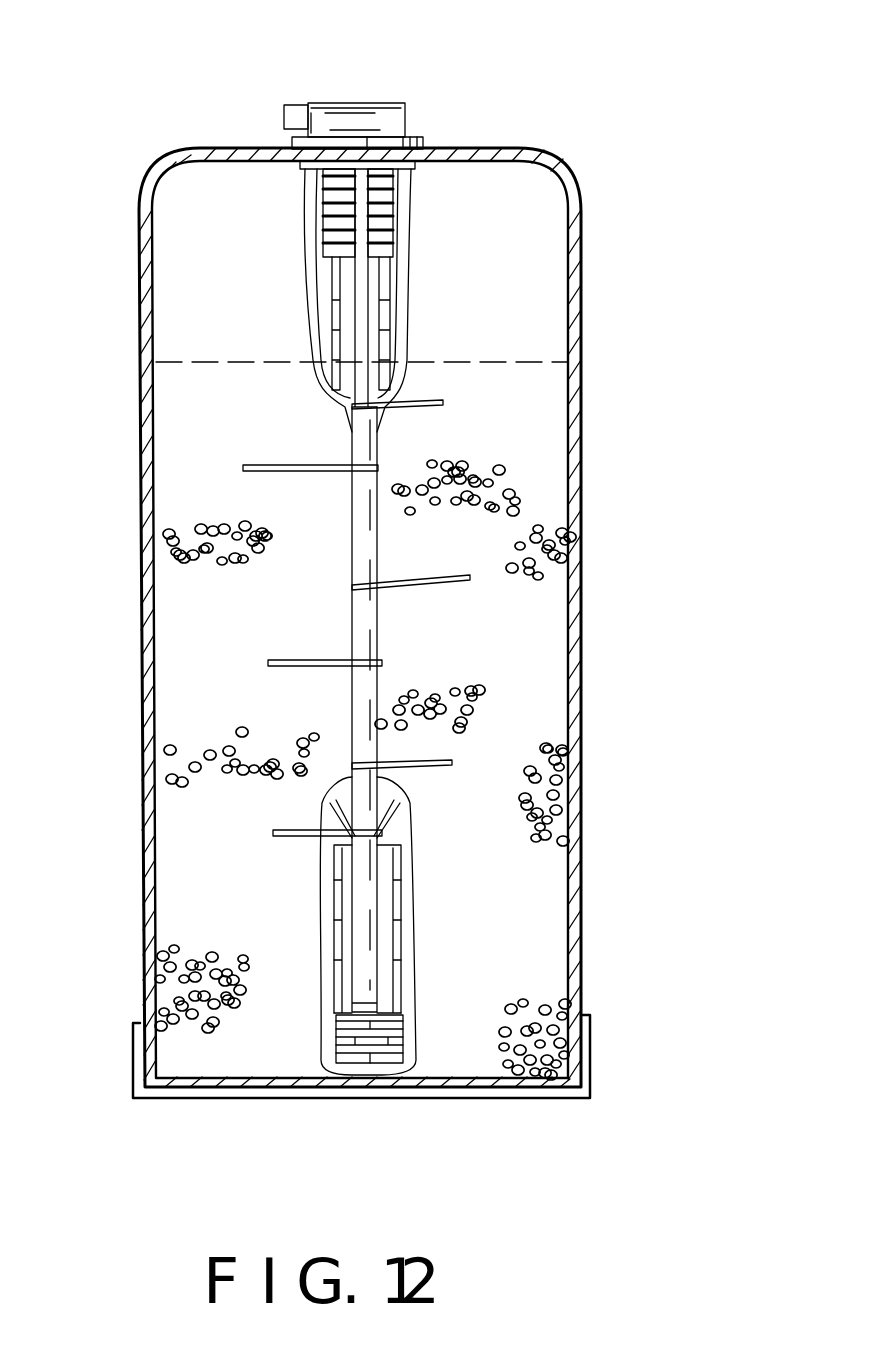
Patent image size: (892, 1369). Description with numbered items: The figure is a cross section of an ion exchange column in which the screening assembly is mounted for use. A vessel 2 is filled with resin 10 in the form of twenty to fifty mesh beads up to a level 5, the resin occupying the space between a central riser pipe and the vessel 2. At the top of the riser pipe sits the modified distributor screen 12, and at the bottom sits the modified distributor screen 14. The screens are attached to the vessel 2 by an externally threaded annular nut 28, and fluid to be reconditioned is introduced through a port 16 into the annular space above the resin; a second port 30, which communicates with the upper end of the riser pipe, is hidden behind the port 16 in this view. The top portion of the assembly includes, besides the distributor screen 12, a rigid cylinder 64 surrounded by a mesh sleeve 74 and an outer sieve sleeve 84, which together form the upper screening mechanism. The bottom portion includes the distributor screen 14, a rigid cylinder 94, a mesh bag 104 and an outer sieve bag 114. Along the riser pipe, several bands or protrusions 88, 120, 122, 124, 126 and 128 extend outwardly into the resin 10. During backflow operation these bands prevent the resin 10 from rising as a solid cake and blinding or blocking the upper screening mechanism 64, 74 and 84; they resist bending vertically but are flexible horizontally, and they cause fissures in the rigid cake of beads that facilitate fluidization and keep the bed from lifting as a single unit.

The vessel 2 is at (570, 535).
The level 5 is at (526, 360).
The resin 10 is at (527, 672).
The distributor screen 12 is at (392, 212).
The distributor screen 14 is at (390, 1038).
The port 16 is at (291, 118).
The annular nut 28 is at (418, 145).
The port 30 is at (343, 84).
The rigid cylinder 64 is at (333, 290).
The mesh sleeve 74 is at (398, 346).
The sieve sleeve 84 is at (366, 300).
The band or protrusion 88 is at (443, 405).
The rigid cylinder 94 is at (343, 916).
The mesh bag 104 is at (400, 921).
The sieve bag 114 is at (385, 926).
The band or protrusion 120 is at (287, 830).
The band or protrusion 122 is at (426, 785).
The band or protrusion 124 is at (308, 660).
The band or protrusion 126 is at (422, 583).
The band or protrusion 128 is at (332, 472).